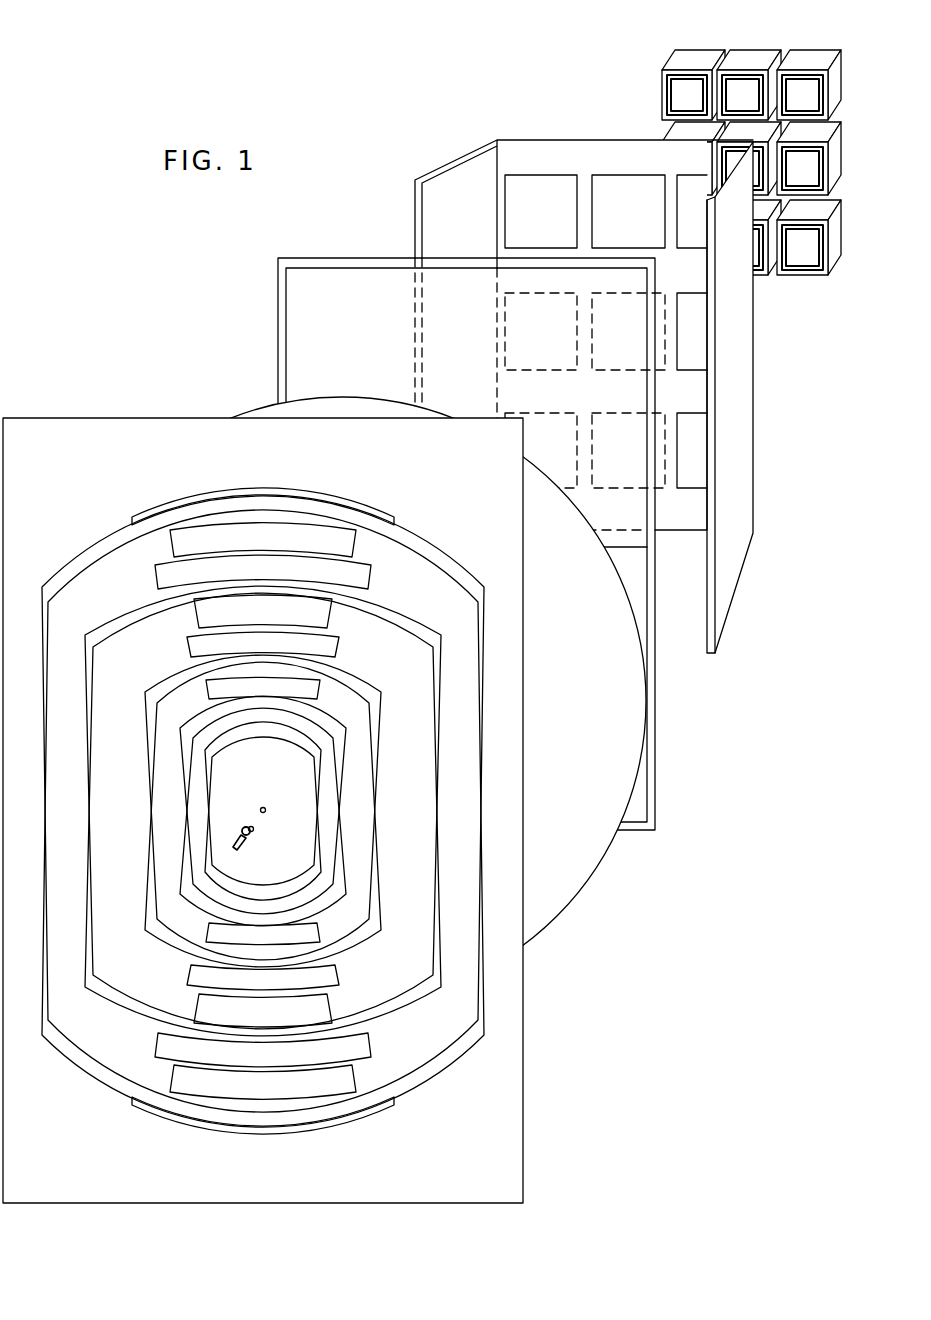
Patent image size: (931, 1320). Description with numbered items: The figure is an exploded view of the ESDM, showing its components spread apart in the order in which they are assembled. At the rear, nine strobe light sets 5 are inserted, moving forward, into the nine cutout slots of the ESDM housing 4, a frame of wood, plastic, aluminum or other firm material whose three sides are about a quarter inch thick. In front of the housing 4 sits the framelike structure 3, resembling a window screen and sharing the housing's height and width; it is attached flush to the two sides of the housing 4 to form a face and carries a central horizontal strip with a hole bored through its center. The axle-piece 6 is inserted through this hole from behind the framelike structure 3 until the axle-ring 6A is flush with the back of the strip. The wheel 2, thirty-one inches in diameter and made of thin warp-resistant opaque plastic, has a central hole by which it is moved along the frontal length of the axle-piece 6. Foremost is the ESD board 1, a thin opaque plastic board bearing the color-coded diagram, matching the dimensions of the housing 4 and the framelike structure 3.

The ESD board 1 is at (153, 427).
The wheel 2 is at (283, 408).
The framelike structure 3 is at (372, 262).
The ESDM housing 4 is at (545, 158).
The strobe light sets 5 is at (803, 50).
The axle-piece 6 is at (240, 832).
The axle-ring 6A is at (250, 838).